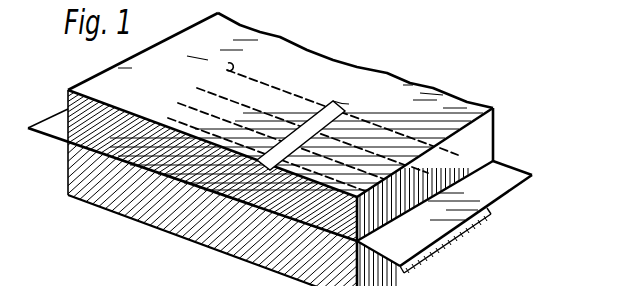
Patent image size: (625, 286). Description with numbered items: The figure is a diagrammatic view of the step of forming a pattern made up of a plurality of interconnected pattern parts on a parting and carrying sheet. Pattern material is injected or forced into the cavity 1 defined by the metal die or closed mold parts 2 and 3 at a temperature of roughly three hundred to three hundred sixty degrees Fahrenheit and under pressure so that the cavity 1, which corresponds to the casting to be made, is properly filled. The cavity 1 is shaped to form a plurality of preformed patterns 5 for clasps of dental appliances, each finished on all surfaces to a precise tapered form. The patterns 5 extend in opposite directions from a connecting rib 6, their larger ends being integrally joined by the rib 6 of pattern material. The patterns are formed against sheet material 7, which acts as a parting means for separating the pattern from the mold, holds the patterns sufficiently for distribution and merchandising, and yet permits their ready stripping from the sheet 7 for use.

The cavity 1 is at (67, 153).
The die or mold part 2 is at (97, 79).
The die or mold part 3 is at (110, 207).
The preformed pattern 5 is at (156, 179).
The connecting rib 6 is at (206, 194).
The parting and carrying sheet 7 is at (53, 119).